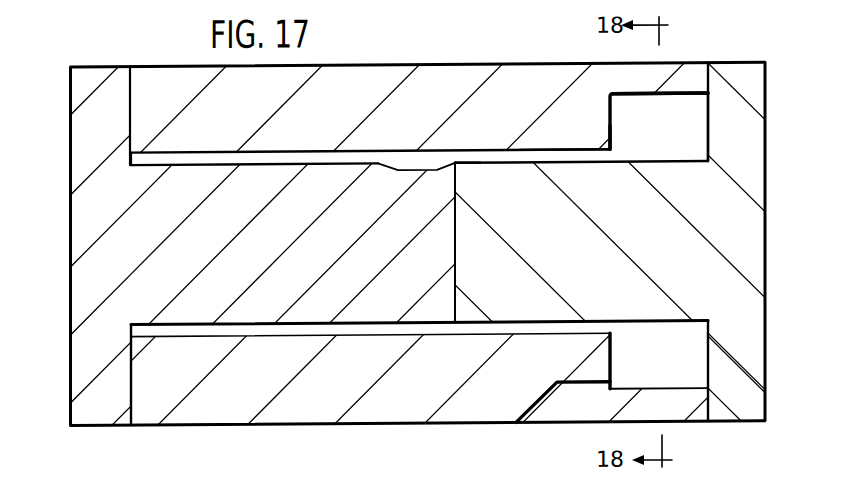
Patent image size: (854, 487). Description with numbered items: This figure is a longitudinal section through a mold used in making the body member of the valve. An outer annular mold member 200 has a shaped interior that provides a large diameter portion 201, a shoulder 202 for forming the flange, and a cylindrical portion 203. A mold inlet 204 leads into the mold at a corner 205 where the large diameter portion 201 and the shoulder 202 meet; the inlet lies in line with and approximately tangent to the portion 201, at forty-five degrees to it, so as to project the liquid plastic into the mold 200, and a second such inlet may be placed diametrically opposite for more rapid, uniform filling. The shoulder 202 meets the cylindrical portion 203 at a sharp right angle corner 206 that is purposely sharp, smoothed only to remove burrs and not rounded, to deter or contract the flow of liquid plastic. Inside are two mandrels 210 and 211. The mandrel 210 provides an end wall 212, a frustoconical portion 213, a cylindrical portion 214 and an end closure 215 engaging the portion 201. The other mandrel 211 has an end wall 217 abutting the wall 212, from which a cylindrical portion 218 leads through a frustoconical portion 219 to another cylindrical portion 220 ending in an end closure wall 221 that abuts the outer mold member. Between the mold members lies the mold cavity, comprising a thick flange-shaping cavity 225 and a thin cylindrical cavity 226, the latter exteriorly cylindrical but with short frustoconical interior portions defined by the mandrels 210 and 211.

The outer annular mold member 200 is at (483, 78).
The large diameter portion 201 is at (650, 84).
The shoulder 202 is at (611, 116).
The cylindrical portion 203 is at (550, 156).
The mold inlet 204 is at (566, 390).
The corner 205 is at (612, 386).
The sharp right angle corner 206 is at (613, 152).
The mandrel 210 is at (753, 260).
The mandrel 211 is at (83, 240).
The end wall 212 is at (453, 201).
The frustoconical portion 213 is at (467, 167).
The cylindrical portion 214 is at (570, 169).
The end closure 215 is at (703, 132).
The end wall 217 is at (456, 238).
The cylindrical portion 218 is at (433, 171).
The frustoconical portion 219 is at (378, 170).
The cylindrical portion 220 is at (269, 168).
The end closure wall 221 is at (132, 114).
The flange-shaping cavity 225 is at (690, 343).
The cylindrical cavity 226 is at (563, 339).